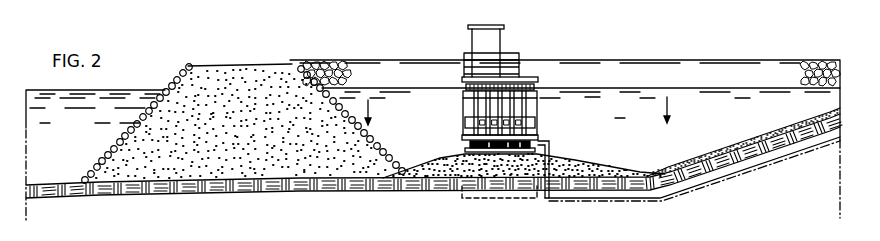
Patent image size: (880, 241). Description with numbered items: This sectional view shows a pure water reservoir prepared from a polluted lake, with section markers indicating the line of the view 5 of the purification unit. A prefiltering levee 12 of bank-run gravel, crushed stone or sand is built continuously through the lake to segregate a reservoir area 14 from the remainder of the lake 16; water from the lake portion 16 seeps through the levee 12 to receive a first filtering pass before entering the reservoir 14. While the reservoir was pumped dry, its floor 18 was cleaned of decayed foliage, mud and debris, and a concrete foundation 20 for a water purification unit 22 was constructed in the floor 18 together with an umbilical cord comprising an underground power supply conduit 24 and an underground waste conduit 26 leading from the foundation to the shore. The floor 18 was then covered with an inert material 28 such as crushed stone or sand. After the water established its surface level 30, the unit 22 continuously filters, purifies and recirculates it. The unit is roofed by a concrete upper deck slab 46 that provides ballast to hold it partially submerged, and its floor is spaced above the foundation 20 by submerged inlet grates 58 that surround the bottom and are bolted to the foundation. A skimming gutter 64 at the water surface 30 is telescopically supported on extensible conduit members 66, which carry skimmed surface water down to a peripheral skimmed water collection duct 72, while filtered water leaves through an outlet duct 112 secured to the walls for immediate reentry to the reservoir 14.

The prefiltering levee 12 is at (231, 68).
The reservoir area 14 is at (781, 111).
The remainder of the lake 16 is at (88, 133).
The floor 18 is at (677, 162).
The foundation 20 is at (460, 195).
The water purification unit 22 is at (524, 52).
The underground power supply conduit 24 is at (717, 178).
The underground waste conduit 26 is at (686, 189).
The inert material 28 is at (373, 150).
The water surface level 30 is at (397, 89).
The upper deck slab 46 is at (540, 76).
The submerged inlet grates 58 is at (470, 144).
The skimming ring or gutter 64 is at (470, 88).
The extensible conduit members 66 is at (530, 110).
The peripheral skimmed water collection duct 72 is at (538, 139).
The outlet duct 112 is at (466, 119).
The section line FIG. 5 is at (524, 111).